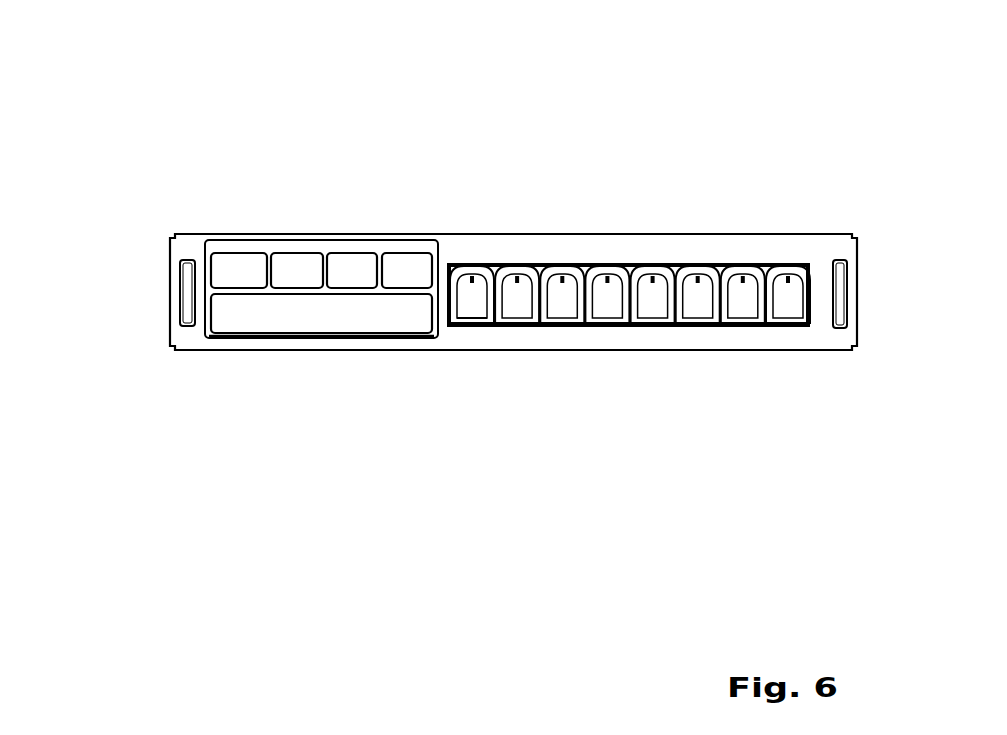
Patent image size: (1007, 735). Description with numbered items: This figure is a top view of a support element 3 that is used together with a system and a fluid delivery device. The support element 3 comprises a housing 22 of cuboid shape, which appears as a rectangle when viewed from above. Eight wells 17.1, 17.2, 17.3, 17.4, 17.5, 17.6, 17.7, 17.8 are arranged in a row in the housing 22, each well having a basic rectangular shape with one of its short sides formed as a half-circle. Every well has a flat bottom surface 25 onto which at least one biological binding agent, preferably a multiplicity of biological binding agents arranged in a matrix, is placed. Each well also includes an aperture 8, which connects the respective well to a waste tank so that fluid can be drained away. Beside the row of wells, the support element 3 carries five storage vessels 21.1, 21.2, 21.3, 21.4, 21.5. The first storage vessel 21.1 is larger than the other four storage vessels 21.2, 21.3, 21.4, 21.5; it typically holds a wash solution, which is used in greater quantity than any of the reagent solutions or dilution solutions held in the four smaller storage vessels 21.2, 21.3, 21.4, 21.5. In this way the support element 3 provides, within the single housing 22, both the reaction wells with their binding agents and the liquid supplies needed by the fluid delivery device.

The support element 3 is at (165, 135).
The aperture 8 is at (472, 280).
The well 17.1 is at (788, 300).
The well 17.2 is at (745, 268).
The well 17.3 is at (700, 300).
The well 17.4 is at (657, 268).
The well 17.5 is at (608, 300).
The well 17.6 is at (567, 268).
The well 17.7 is at (518, 300).
The well 17.8 is at (480, 268).
The first storage vessel 21.1 is at (284, 316).
The storage vessel 21.2 is at (234, 270).
The storage vessel 21.3 is at (297, 270).
The storage vessel 21.4 is at (345, 270).
The storage vessel 21.5 is at (402, 270).
The housing 22 is at (648, 346).
The flat bottom surface 25 is at (472, 300).